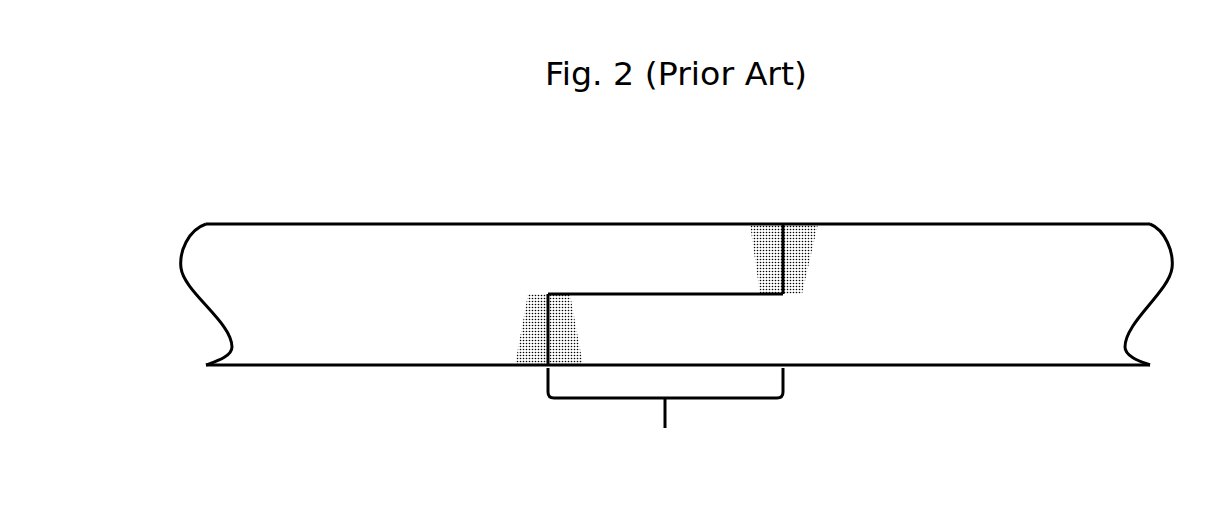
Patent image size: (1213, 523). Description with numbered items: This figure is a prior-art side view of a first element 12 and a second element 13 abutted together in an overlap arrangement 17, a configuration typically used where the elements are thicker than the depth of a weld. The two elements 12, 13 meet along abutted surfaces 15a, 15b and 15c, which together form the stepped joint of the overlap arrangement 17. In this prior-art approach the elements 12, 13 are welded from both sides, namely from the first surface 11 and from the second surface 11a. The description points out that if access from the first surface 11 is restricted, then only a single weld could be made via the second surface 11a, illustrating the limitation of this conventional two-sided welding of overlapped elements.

The first surface 11 is at (271, 206).
The second surface 11a is at (1071, 375).
The first element 12 is at (322, 343).
The second element 13 is at (1020, 250).
The abutted surface 15a is at (783, 243).
The abutted surface 15b is at (548, 343).
The abutted surface 15c is at (743, 294).
The overlap arrangement 17 is at (665, 417).